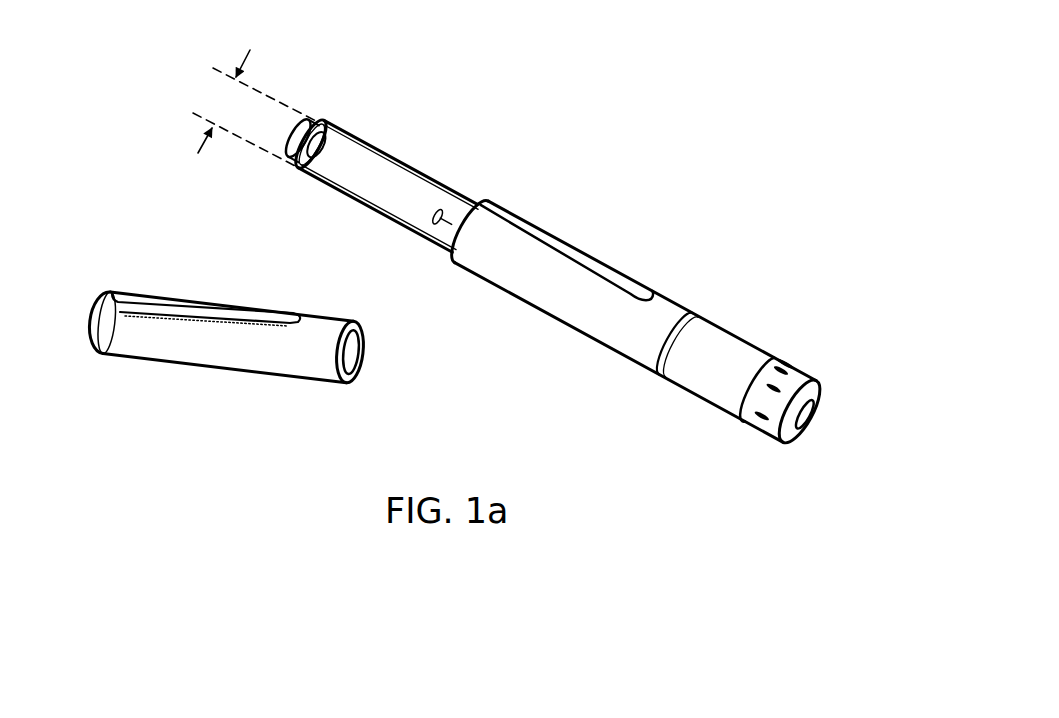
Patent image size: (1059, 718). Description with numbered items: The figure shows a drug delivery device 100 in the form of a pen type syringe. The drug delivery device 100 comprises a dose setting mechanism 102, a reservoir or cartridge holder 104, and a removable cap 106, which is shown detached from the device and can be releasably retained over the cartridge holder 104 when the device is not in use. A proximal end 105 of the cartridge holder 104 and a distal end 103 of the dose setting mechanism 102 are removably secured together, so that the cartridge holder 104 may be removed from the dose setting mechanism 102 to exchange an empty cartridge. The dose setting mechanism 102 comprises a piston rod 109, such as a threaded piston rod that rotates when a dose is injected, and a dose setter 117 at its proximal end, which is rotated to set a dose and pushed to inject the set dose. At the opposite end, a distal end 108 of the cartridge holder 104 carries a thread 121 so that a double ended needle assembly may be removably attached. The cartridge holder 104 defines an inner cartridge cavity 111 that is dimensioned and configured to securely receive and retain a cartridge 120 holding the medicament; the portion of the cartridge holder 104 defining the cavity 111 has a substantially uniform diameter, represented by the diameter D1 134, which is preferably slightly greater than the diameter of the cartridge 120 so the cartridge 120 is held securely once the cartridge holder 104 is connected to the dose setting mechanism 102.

The drug delivery device 100 is at (642, 48).
The dose setting mechanism 102 is at (606, 210).
The distal end of the dose setting mechanism 103 is at (428, 239).
The cartridge holder 104 is at (456, 86).
The proximal end of the cartridge holder 105 is at (466, 210).
The removable cap 106 is at (144, 270).
The distal end of the cartridge holder 108 is at (298, 125).
The piston rod 109 is at (433, 228).
The inner cartridge cavity 111 is at (355, 180).
The dose setter 117 is at (769, 332).
The cartridge 120 is at (382, 177).
The thread 121 is at (300, 118).
The diameter D1 134 is at (205, 81).